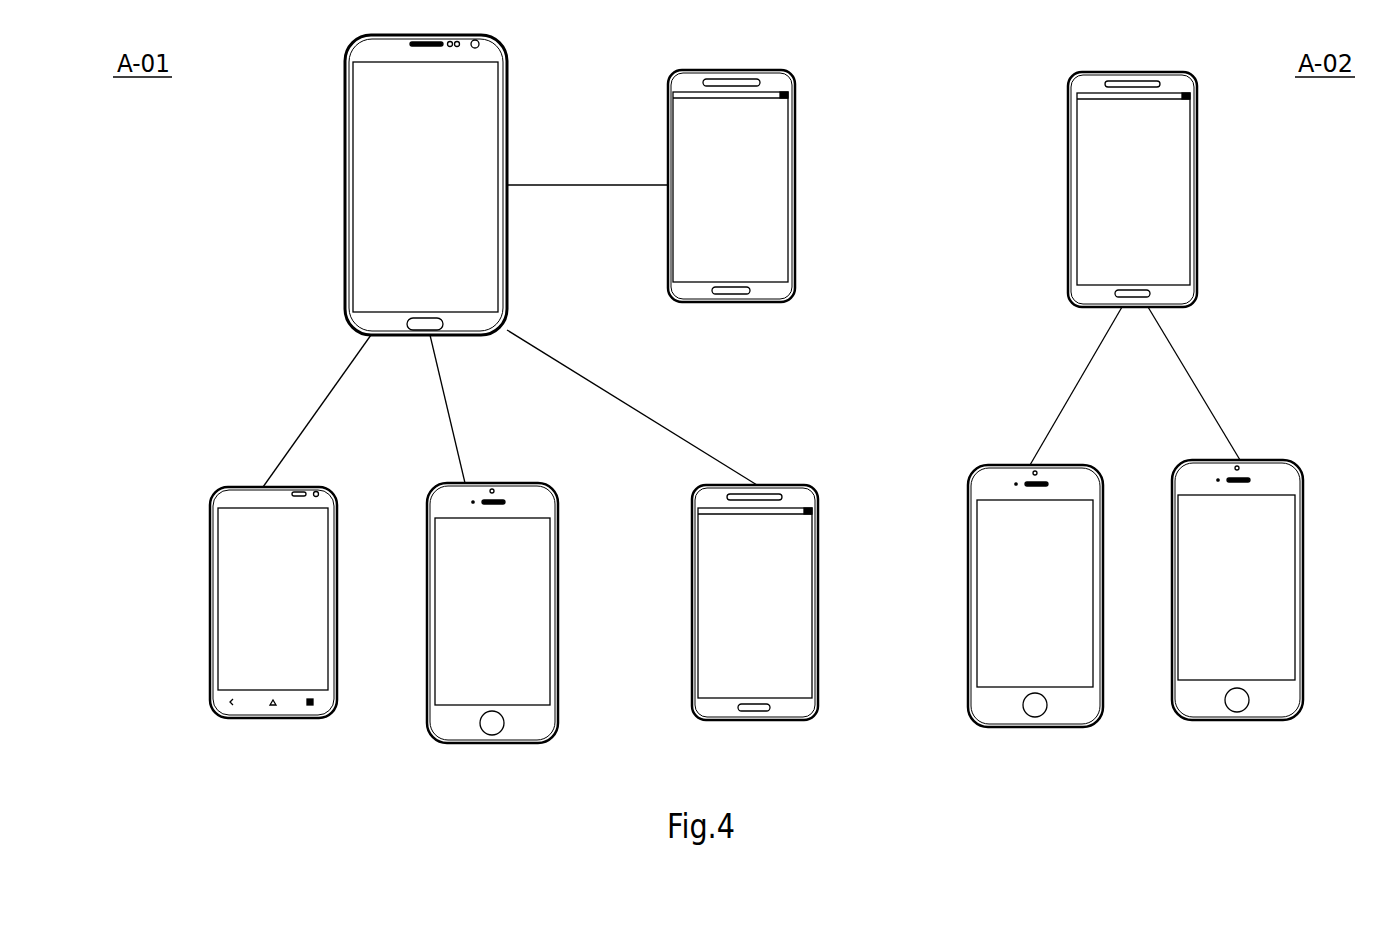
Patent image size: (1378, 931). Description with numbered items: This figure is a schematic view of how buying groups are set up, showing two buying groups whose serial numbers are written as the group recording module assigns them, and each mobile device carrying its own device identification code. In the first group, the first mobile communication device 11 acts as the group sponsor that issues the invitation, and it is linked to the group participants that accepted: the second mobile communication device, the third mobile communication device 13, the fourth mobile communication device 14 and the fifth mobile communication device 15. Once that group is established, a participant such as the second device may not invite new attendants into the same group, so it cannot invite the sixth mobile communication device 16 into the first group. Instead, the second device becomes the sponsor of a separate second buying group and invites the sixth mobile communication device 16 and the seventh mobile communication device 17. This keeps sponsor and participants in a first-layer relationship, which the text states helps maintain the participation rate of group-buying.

The first mobile communication device 11 is at (345, 165).
The third mobile communication device 13 is at (778, 485).
The fourth mobile communication device 14 is at (560, 590).
The fifth mobile communication device 15 is at (248, 487).
The sixth mobile communication device 16 is at (1010, 465).
The seventh mobile communication device 17 is at (1245, 460).